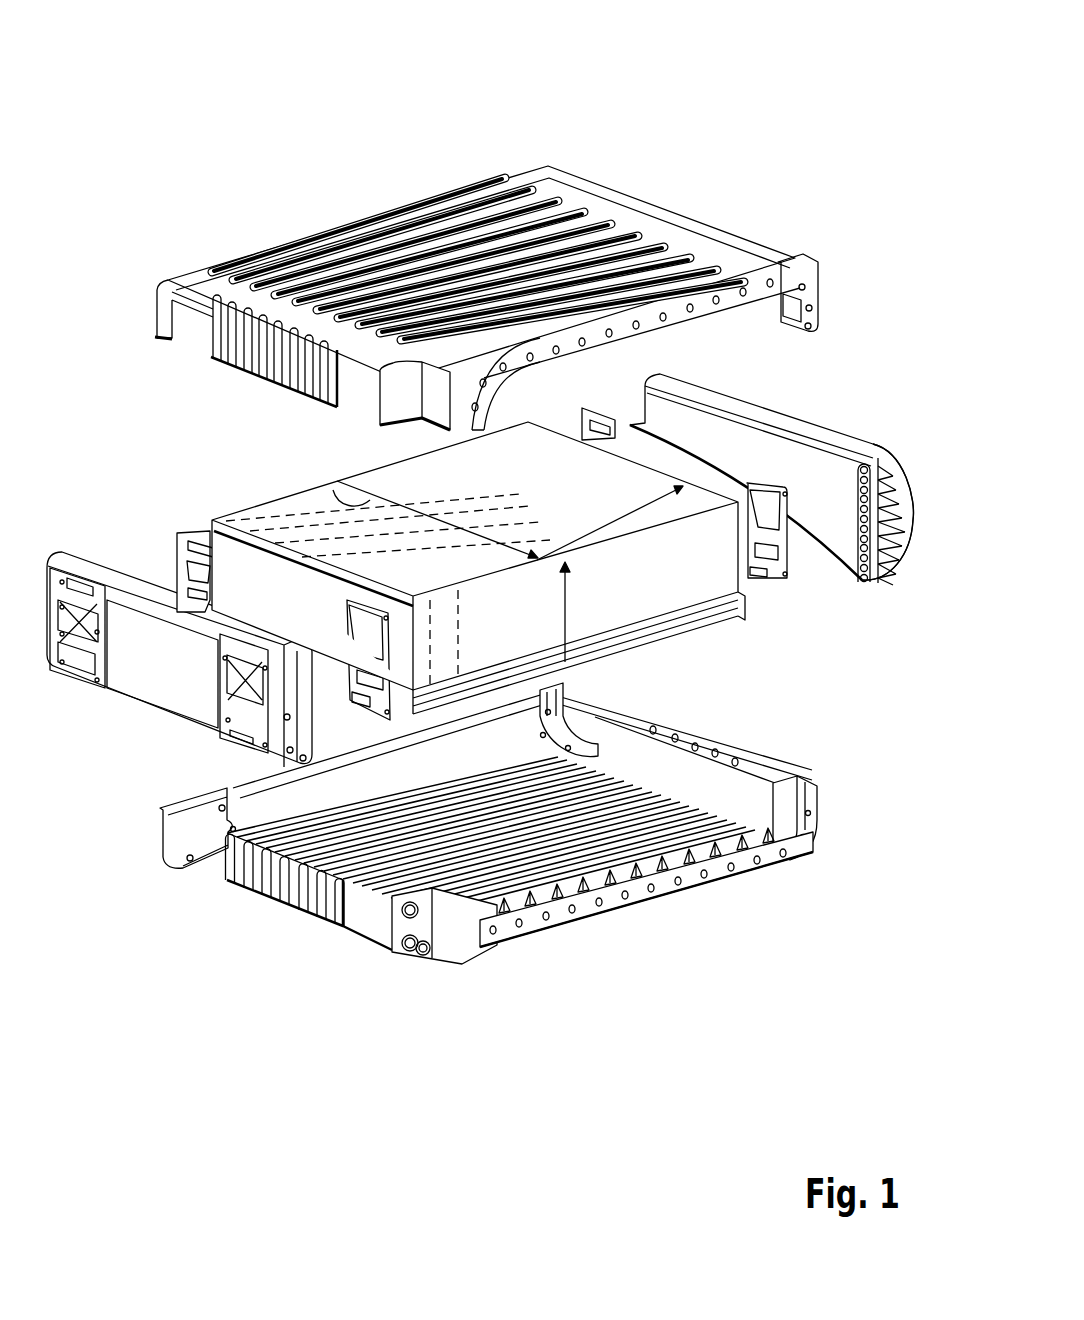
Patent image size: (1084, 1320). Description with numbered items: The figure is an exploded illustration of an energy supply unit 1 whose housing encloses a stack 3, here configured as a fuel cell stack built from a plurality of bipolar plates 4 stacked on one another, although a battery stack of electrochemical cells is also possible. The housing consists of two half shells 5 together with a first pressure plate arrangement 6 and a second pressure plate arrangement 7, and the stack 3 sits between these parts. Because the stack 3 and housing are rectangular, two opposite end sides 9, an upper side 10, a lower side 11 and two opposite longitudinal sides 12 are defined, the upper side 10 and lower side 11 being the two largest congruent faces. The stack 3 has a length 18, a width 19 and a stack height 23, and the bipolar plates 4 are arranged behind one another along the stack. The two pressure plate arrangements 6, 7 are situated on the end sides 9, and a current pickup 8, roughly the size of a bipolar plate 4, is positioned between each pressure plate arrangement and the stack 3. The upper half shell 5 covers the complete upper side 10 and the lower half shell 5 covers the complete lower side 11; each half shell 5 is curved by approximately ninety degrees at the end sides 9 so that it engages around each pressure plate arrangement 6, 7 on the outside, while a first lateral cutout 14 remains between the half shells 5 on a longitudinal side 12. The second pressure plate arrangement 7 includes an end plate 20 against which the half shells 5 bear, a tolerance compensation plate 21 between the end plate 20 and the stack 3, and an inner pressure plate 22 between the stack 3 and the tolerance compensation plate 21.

The energy supply unit 1 is at (803, 82).
The stack 3 is at (519, 486).
The bipolar plates 4 is at (270, 513).
The half shells 5 is at (555, 185).
The first pressure plate arrangement 6 is at (91, 520).
The second pressure plate arrangement 7 is at (840, 408).
The current pickup 8 is at (183, 543).
The end sides 9 is at (846, 338).
The upper side 10 is at (367, 196).
The lower side 11 is at (556, 962).
The longitudinal sides 12 is at (688, 573).
The first lateral cutout 14 is at (662, 890).
The length 18 is at (590, 510).
The width 19 is at (337, 494).
The end plate 20 is at (900, 563).
The tolerance compensation plate 21 is at (873, 577).
The inner pressure plate 22 is at (865, 577).
The stack height 23 is at (565, 602).